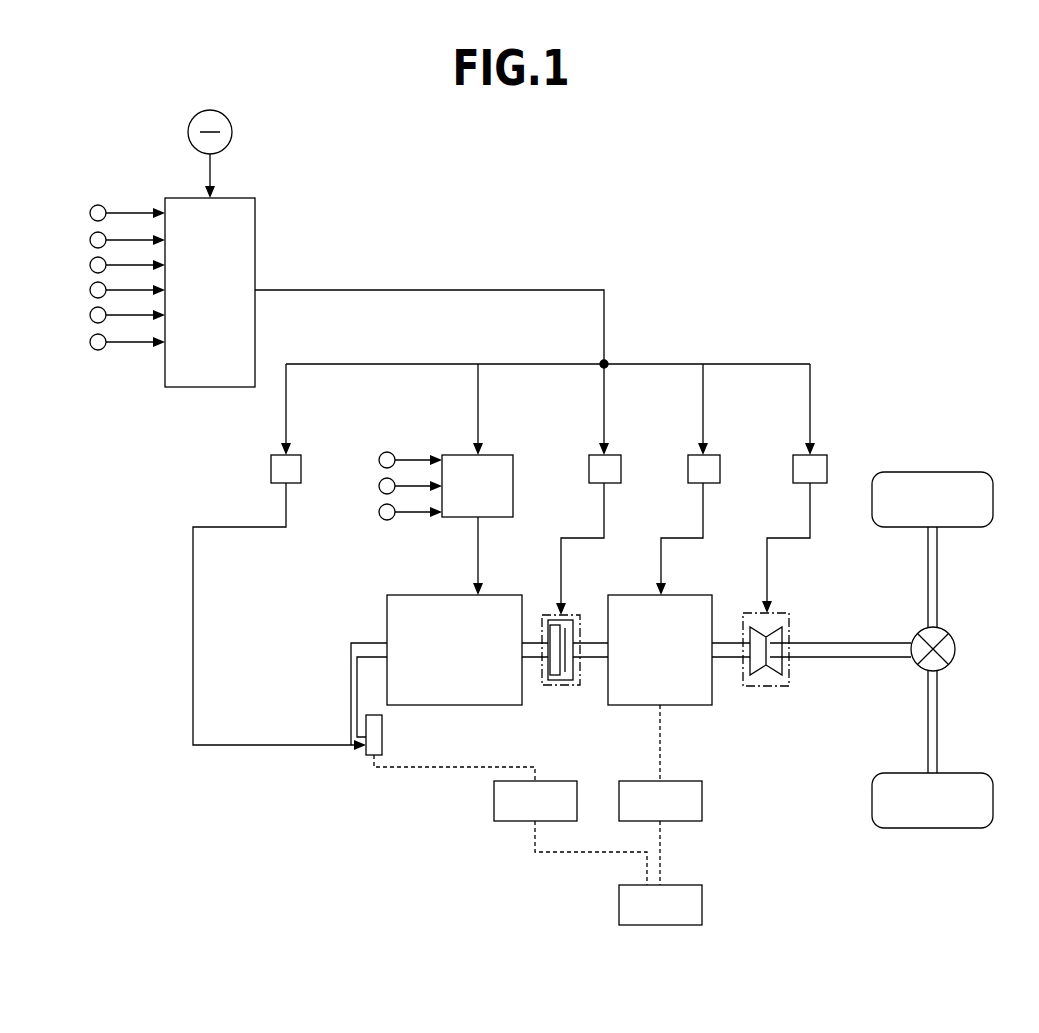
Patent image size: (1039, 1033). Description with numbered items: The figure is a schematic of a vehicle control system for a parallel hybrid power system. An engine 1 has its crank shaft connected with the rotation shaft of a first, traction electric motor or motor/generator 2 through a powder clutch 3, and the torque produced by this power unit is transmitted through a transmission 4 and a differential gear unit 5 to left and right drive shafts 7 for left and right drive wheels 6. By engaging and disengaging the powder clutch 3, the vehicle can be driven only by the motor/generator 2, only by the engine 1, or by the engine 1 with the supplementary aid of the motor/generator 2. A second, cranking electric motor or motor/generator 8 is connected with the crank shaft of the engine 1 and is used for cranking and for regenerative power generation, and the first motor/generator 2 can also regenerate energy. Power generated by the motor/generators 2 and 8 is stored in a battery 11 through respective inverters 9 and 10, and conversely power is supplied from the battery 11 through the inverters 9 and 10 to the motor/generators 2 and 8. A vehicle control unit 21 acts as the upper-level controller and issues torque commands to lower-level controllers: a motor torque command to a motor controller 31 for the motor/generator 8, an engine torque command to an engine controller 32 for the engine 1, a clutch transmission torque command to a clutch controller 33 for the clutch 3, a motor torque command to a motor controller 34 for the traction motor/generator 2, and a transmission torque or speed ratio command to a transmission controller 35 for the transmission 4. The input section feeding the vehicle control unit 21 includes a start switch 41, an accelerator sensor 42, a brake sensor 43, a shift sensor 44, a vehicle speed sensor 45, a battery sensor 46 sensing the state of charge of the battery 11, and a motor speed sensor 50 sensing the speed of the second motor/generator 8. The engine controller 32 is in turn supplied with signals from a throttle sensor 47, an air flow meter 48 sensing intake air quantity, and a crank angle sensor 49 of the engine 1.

The engine 1 is at (497, 595).
The first electric motor (traction motor/generator) 2 is at (700, 595).
The powder clutch 3 is at (553, 686).
The transmission 4 is at (789, 624).
The differential gear unit 5 is at (953, 649).
The drive wheel 6 is at (973, 472).
The drive shaft 7 is at (937, 585).
The second electric motor (cranking motor/generator) 8 is at (383, 733).
The inverter (INV1) 9 is at (683, 781).
The inverter (INV2) 10 is at (553, 781).
The battery (BATT) 11 is at (683, 885).
The vehicle control unit (vehicle ECU) 21 is at (181, 197).
The motor controller 31 is at (270, 466).
The engine controller 32 is at (497, 455).
The clutch controller 33 is at (615, 455).
The motor controller 34 is at (713, 455).
The transmission controller 35 is at (821, 455).
The start switch 41 is at (193, 116).
The accelerator sensor 42 is at (90, 214).
The brake sensor 43 is at (90, 241).
The shift sensor 44 is at (90, 266).
The vehicle speed sensor 45 is at (90, 291).
The battery sensor 46 is at (90, 316).
The throttle sensor 47 is at (378, 461).
The air flow meter 48 is at (378, 487).
The crank angle sensor 49 is at (378, 513).
The motor speed sensor 50 is at (90, 343).